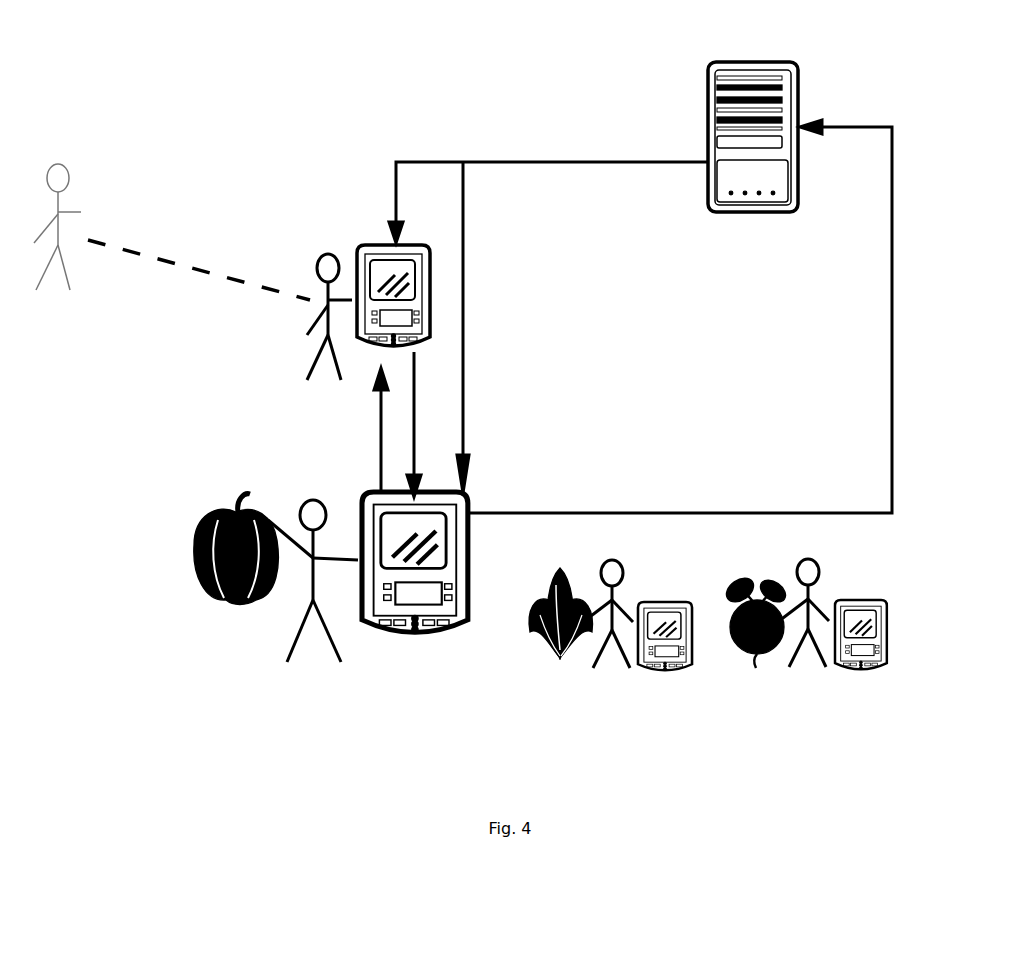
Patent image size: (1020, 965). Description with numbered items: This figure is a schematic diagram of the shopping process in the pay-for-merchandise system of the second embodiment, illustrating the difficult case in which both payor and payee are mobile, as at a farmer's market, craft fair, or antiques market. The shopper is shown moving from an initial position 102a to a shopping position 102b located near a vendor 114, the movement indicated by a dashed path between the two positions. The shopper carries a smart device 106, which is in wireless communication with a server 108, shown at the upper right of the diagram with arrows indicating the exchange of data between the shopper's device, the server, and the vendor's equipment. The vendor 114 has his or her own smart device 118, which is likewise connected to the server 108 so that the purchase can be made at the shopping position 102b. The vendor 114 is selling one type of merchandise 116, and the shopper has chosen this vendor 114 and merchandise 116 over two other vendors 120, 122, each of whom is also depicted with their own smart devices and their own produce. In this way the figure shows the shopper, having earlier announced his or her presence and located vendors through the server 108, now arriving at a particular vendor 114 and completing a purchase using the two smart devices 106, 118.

The initial position 102a is at (55, 162).
The shopping position 102b is at (322, 254).
The smart device 106 is at (390, 252).
The server 108 is at (752, 62).
The vendor 114 is at (291, 660).
The merchandise 116 is at (218, 606).
The smart device 118 is at (397, 640).
The vendor 120 is at (600, 668).
The vendor 122 is at (792, 668).